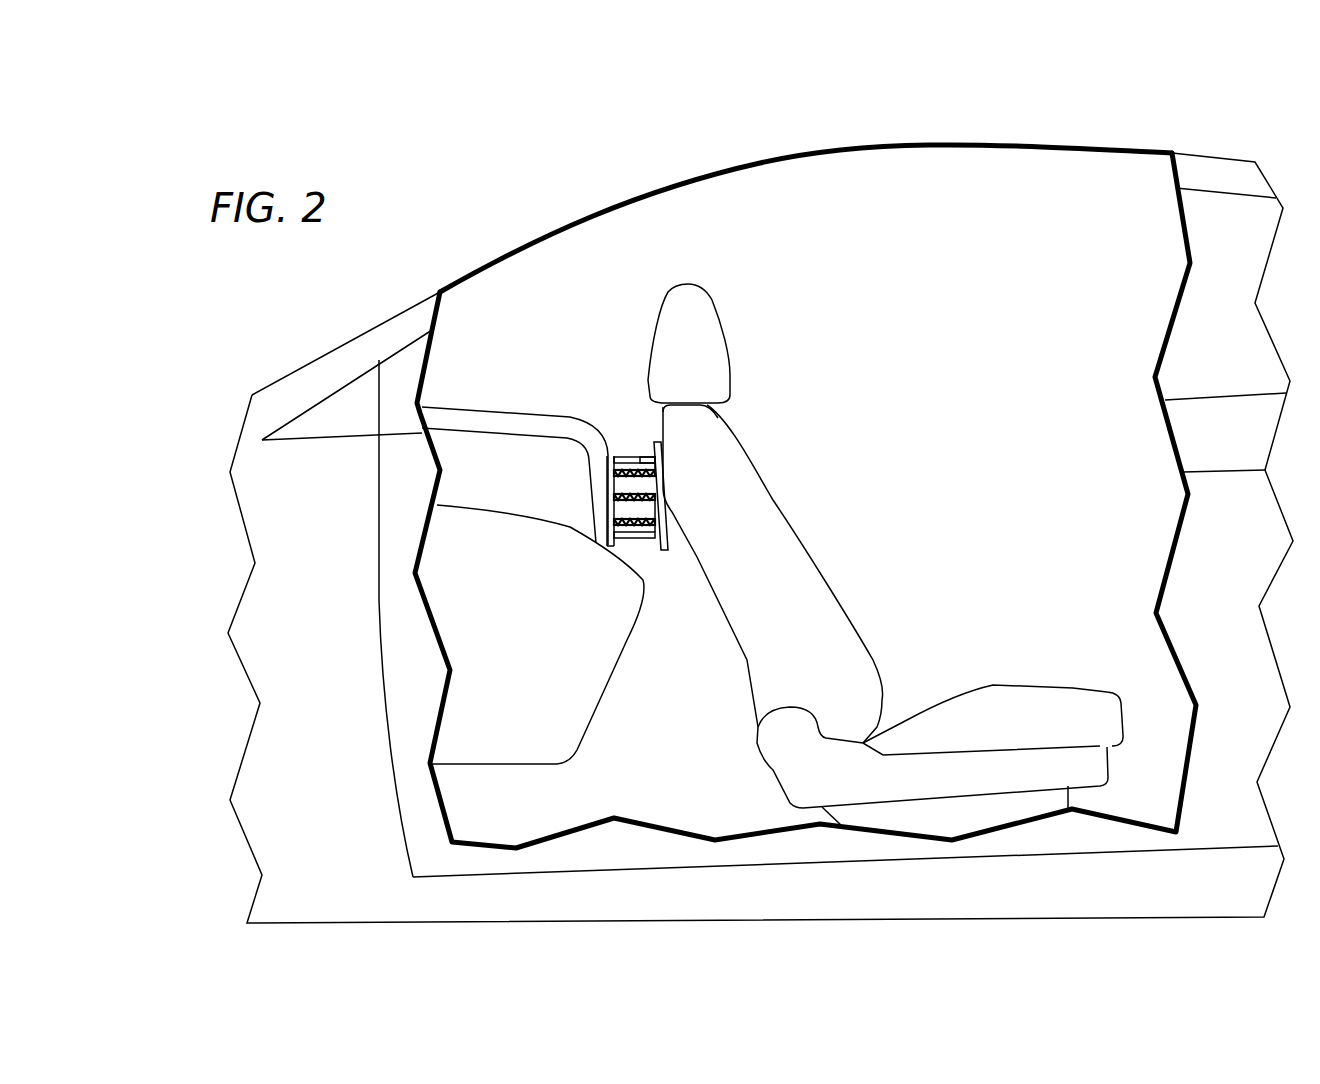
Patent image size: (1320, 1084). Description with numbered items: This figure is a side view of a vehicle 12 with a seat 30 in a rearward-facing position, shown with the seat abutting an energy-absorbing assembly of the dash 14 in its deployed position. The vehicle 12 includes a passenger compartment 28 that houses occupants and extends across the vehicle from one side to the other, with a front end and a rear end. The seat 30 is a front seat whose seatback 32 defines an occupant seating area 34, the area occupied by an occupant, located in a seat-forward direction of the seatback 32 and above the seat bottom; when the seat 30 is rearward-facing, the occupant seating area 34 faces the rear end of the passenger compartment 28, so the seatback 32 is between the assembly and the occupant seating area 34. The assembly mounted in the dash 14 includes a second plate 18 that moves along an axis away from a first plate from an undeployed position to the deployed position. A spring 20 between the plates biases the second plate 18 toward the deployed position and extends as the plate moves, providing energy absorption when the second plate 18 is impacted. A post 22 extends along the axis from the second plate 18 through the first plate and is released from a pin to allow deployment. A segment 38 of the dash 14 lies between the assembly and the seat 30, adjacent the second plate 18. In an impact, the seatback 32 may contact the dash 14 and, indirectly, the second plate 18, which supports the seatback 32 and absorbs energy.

The vehicle 12 is at (1162, 103).
The dash 14 is at (513, 460).
The second plate 18 is at (652, 545).
The spring 20 is at (652, 530).
The post 22 is at (642, 458).
The passenger compartment 28 is at (1053, 177).
The seat 30 is at (1028, 685).
The seatback 32 is at (785, 545).
The occupant seating area 34 is at (955, 523).
The segment 38 is at (670, 545).